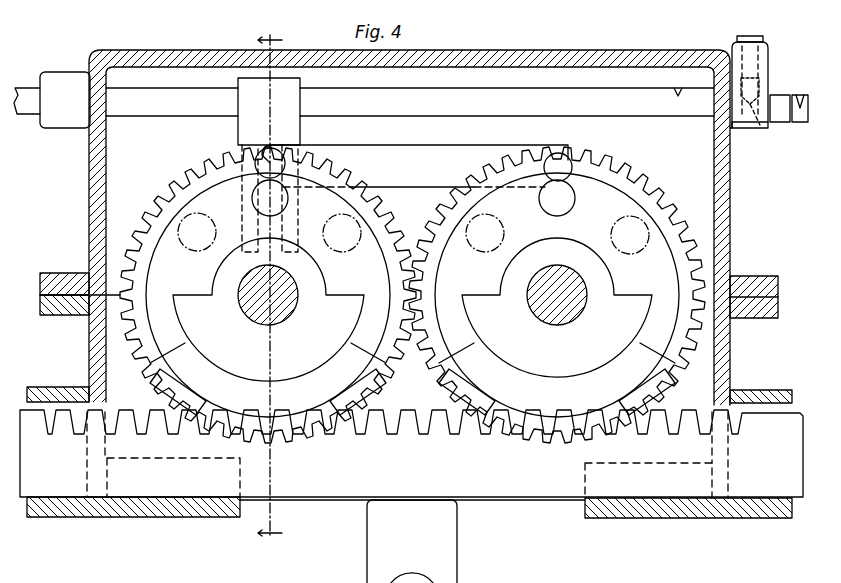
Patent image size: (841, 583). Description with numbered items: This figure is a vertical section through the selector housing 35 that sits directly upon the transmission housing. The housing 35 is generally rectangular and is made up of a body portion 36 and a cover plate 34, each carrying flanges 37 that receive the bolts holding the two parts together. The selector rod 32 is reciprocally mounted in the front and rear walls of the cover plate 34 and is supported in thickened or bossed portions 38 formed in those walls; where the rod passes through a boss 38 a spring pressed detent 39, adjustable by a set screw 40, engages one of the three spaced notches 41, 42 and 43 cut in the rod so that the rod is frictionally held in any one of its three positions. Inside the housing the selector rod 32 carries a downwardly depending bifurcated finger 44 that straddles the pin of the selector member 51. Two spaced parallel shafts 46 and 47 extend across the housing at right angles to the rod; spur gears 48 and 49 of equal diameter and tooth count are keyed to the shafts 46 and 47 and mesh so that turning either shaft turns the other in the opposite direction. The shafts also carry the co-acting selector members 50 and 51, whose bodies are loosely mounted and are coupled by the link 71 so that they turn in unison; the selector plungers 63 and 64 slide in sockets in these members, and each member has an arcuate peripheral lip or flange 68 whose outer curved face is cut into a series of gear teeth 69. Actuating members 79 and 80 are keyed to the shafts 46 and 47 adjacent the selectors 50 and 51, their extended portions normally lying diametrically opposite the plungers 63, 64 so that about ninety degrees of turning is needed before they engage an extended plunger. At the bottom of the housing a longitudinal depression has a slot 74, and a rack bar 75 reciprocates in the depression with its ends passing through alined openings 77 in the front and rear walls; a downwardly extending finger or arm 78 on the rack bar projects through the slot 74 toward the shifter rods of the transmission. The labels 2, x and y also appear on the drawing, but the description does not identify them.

The hole 2 is at (634, 250).
The selector rod 32 is at (364, 100).
The cover plate 34 is at (731, 190).
The housing 35 is at (731, 260).
The body portion 36 is at (736, 386).
The flanges 37 is at (760, 288).
The thickened or bossed portions 38 is at (752, 130).
The spring pressed detent 39 is at (762, 78).
The set screw 40 is at (755, 40).
The notch 41 is at (769, 125).
The notch 42 is at (789, 99).
The notch 43 is at (676, 92).
The bifurcated finger 44 is at (240, 130).
The shaft 46 is at (560, 322).
The shaft 47 is at (268, 295).
The spur gear 48 is at (630, 170).
The spur gear 49 is at (210, 162).
The selector member 50 is at (622, 220).
The selector member 51 is at (190, 247).
The selector plunger 63 is at (568, 207).
The selector plunger 64 is at (325, 222).
The arcuate peripheral lip or flange 68 is at (235, 395).
The gear teeth 69 is at (264, 432).
The link 71 is at (438, 151).
The slot 74 is at (245, 507).
The rack bar 75 is at (545, 500).
The alined openings 77 is at (350, 500).
The finger or arm 78 is at (458, 548).
The actuating member 79 is at (557, 307).
The actuating member 80 is at (268, 309).
The point x is at (252, 200).
The point y is at (216, 232).